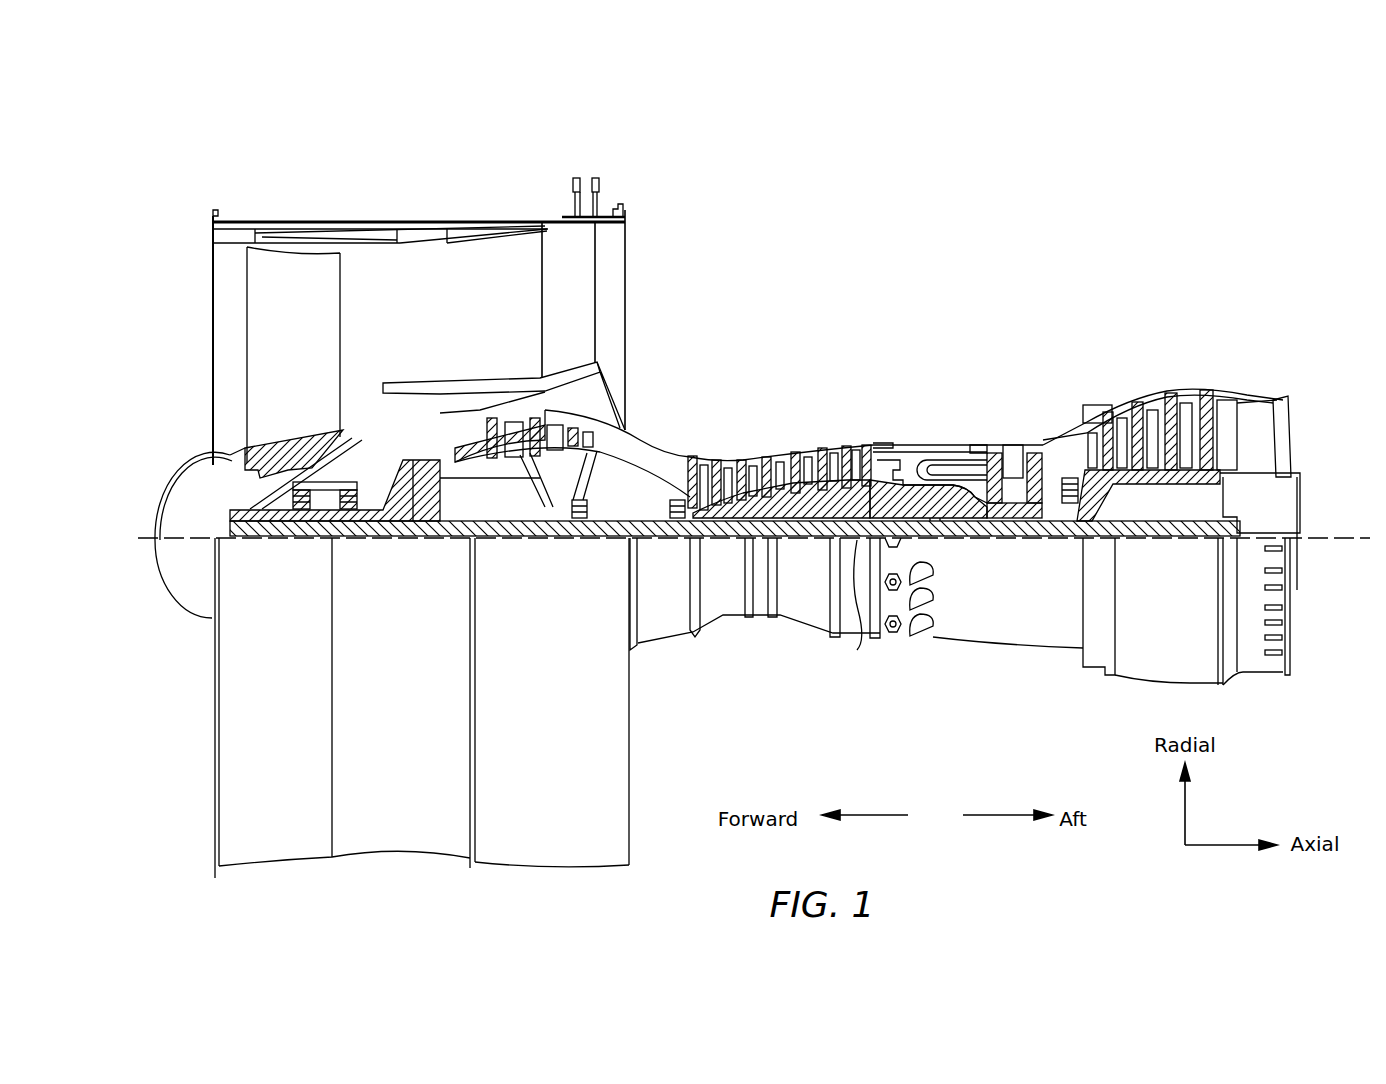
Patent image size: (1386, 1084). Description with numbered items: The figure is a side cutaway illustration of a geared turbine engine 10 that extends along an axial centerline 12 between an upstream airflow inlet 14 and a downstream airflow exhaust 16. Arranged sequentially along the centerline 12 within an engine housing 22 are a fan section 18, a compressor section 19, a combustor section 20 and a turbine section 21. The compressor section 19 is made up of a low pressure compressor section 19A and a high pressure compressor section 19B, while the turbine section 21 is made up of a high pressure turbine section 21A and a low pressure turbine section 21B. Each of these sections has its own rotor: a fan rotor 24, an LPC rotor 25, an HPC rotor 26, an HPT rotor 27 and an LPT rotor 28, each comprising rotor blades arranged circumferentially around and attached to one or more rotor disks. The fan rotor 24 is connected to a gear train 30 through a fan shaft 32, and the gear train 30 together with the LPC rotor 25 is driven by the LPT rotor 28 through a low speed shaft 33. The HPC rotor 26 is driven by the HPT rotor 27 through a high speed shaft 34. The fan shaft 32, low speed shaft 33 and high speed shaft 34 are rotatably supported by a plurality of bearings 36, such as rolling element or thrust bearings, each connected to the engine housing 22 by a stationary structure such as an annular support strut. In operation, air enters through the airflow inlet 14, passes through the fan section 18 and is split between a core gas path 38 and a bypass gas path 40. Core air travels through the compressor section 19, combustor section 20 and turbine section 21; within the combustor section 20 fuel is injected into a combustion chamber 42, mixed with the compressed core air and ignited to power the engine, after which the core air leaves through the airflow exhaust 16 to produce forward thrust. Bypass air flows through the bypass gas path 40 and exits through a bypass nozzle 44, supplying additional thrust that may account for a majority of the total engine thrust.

The geared turbine engine 10 is at (181, 205).
The axial centerline 12 is at (1345, 542).
The upstream airflow inlet 14 is at (213, 295).
The downstream airflow exhaust 16 is at (1295, 437).
The fan section 18 is at (385, 197).
The compressor section 19 is at (854, 136).
The low pressure compressor section 19A is at (630, 181).
The high pressure compressor section 19B is at (855, 373).
The combustor section 20 is at (875, 373).
The turbine section 21 is at (985, 303).
The high pressure turbine section 21A is at (1070, 373).
The low pressure turbine section 21B is at (1247, 373).
The engine housing 22 is at (649, 648).
The fan rotor 24 is at (240, 470).
The LPC rotor 25 is at (535, 482).
The HPC rotor 26 is at (800, 500).
The HPT rotor 27 is at (1013, 520).
The LPT rotor 28 is at (1165, 480).
The gear train 30 is at (435, 536).
The fan shaft 32 is at (283, 536).
The low speed shaft 33 is at (785, 609).
The high speed shaft 34 is at (943, 517).
The bearings 36 is at (345, 510).
The core gas path 38 is at (655, 456).
The bypass gas path 40 is at (472, 313).
The combustion chamber 42 is at (945, 470).
The bypass nozzle 44 is at (627, 275).